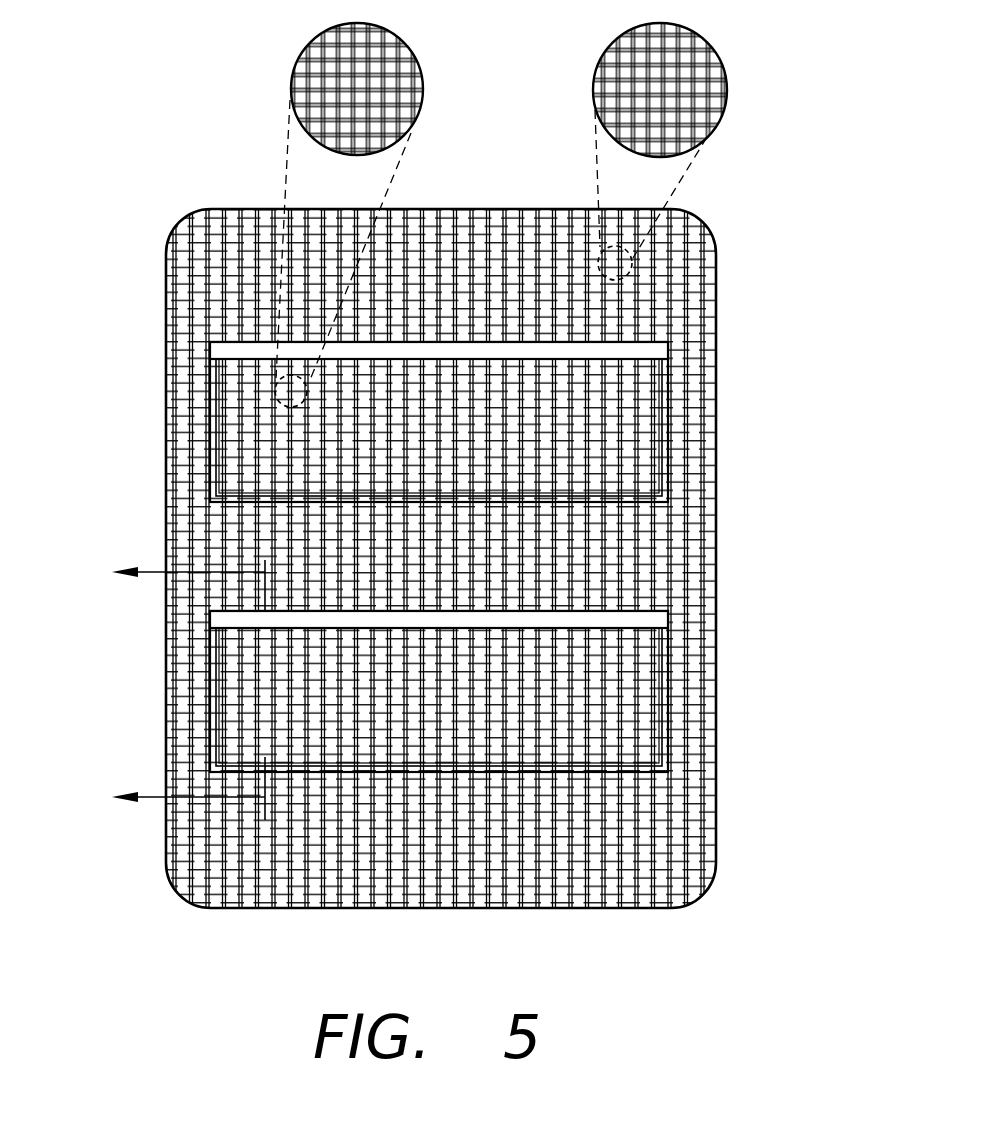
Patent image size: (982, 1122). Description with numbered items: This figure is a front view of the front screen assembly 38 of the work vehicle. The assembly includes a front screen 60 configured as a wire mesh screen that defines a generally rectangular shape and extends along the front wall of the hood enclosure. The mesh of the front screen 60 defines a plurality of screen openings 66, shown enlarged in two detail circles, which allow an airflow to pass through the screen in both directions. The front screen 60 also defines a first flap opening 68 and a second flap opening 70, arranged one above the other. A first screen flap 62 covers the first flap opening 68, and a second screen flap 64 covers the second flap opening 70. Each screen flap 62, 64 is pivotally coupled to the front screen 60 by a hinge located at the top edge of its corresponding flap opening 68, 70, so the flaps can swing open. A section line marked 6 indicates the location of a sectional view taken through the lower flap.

The front screen assembly 38 is at (172, 170).
The front screen 60 is at (680, 525).
The first screen flap 62 is at (443, 397).
The second screen flap 64 is at (441, 669).
The screen openings 66 is at (350, 47).
The first flap opening 68 is at (658, 410).
The second flap opening 70 is at (658, 680).
The section line 6- 6 is at (179, 676).